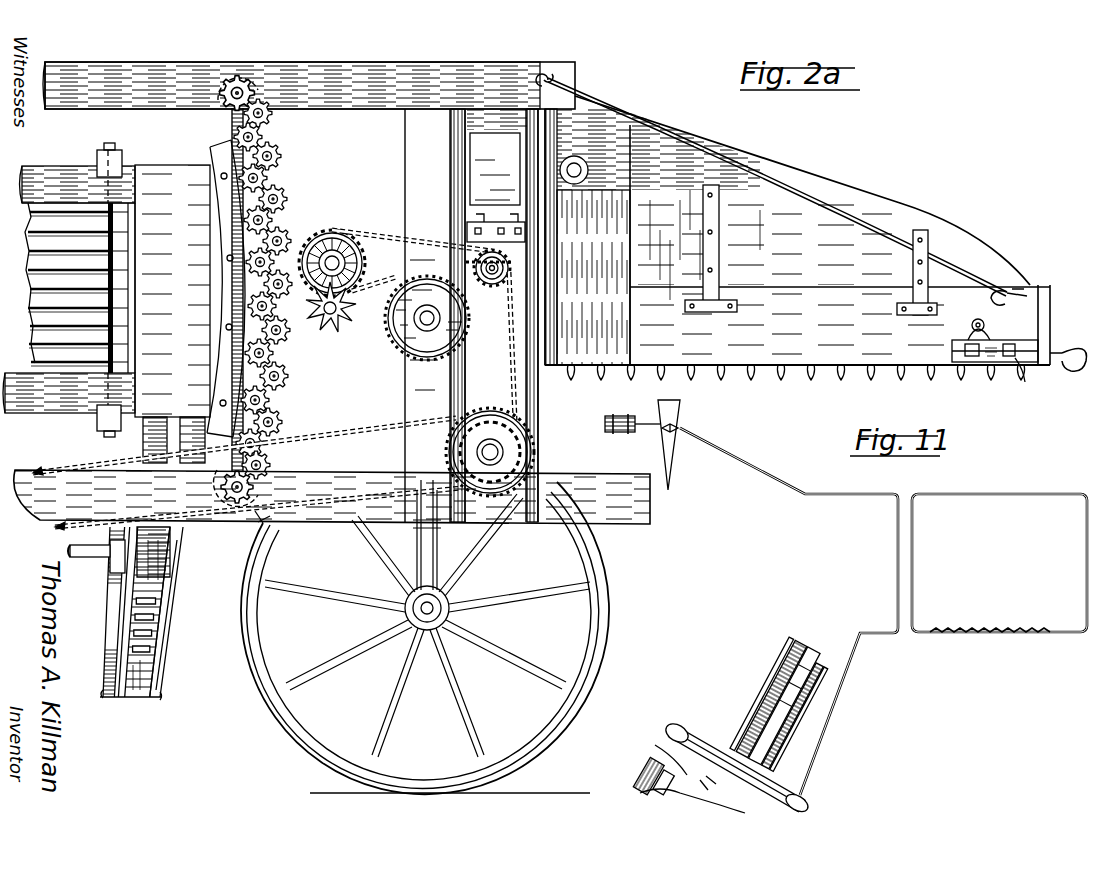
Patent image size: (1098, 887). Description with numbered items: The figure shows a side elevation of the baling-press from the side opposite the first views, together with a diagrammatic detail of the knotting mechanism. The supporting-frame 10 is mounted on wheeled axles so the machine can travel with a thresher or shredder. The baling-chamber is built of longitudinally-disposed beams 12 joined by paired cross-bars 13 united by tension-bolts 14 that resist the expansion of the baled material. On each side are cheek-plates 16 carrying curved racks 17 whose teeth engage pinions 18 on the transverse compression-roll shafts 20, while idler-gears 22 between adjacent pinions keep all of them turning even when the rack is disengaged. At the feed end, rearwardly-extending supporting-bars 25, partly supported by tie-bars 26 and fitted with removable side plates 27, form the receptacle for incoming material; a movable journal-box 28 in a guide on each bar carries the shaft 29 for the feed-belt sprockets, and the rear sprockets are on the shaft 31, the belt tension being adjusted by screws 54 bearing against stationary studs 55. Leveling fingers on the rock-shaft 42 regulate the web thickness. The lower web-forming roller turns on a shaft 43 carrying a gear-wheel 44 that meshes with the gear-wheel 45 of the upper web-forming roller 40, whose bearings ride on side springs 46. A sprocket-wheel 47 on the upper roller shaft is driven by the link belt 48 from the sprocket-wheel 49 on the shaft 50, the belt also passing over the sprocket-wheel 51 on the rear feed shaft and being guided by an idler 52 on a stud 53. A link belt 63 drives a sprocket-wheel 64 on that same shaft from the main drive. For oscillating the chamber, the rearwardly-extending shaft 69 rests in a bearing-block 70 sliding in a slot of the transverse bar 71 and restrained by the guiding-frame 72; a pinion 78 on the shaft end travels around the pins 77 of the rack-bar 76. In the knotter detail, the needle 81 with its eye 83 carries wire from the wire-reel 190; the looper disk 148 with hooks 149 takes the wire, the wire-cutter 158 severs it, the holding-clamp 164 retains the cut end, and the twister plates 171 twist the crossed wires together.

In FIG. 2A, the supporting-frame 10 is at (646, 515).
In FIG. 2A, the longitudinally-disposed beams 12 is at (42, 177).
In FIG. 2A, the cross-bars 13 is at (99, 156).
In FIG. 2A, the tension-bolts 14 is at (168, 430).
In FIG. 2A, the cheek-plates 16 is at (172, 291).
In FIG. 2A, the curved racks 17 is at (214, 143).
In FIG. 2A, the pinions 18 is at (244, 80).
In FIG. 2A, the compression-roll shafts 20 is at (258, 98).
In FIG. 2A, the idler-gears 22 is at (282, 155).
In FIG. 2A, the supporting-bars 25 is at (797, 332).
In FIG. 2A, the tie-bars 26 is at (648, 123).
In FIG. 2A, the side plates 27 is at (812, 229).
In FIG. 2A, the journal-box 28 is at (968, 325).
In FIG. 2A, the shaft 29 is at (983, 323).
In FIG. 2A, the shaft 31 is at (427, 318).
In FIG. 2A, the upper web-forming roller 40 is at (310, 278).
In FIG. 2A, the rock-shaft 42 is at (580, 179).
In FIG. 2A, the shaft 43 is at (327, 318).
In FIG. 2A, the gear-wheel 44 is at (342, 328).
In FIG. 2A, the gear-wheel 45 is at (344, 234).
In FIG. 2A, the side springs 46 is at (432, 242).
In FIG. 2A, the sprocket-wheel 47 is at (366, 262).
In FIG. 2A, the link belt 48 is at (498, 378).
In FIG. 2A, the sprocket-wheel 49 is at (490, 452).
In FIG. 2A, the shaft 50 is at (490, 453).
In FIG. 2A, the sprocket-wheel 51 is at (400, 348).
In FIG. 2A, the idler 52 is at (492, 284).
In FIG. 2A, the stud 53 is at (515, 264).
In FIG. 2A, the screws 54 is at (1066, 370).
In FIG. 2A, the stationary studs 55 is at (1029, 377).
In FIG. 2A, the link belt 63 is at (48, 540).
In FIG. 2A, the sprocket-wheel 64 is at (530, 472).
In FIG. 2A, the rearwardly-extending shaft 69 is at (84, 550).
In FIG. 2A, the bearing-block 70 is at (112, 564).
In FIG. 2A, the transversely-extending bar 71 is at (120, 586).
In FIG. 2A, the guiding-frame 72 is at (118, 620).
In FIG. 2A, the rack-bar 76 is at (168, 600).
In FIG. 2A, the pins 77 is at (136, 638).
In FIG. 2A, the pinion 78 is at (172, 548).
In FIG. 2A, the needle 81 is at (678, 405).
In FIG. 2A, the eye 83 is at (680, 427).
In FIG. 11, the dished plate or disk 148 is at (714, 746).
In FIG. 11, the hooks 149 is at (678, 725).
In FIG. 11, the wire-cutter 158 is at (688, 774).
In FIG. 11, the holding-clamp 164 is at (808, 802).
In FIG. 11, the spaced plates 171 is at (788, 655).
In FIG. 2A, the wire-reel 190 is at (632, 415).